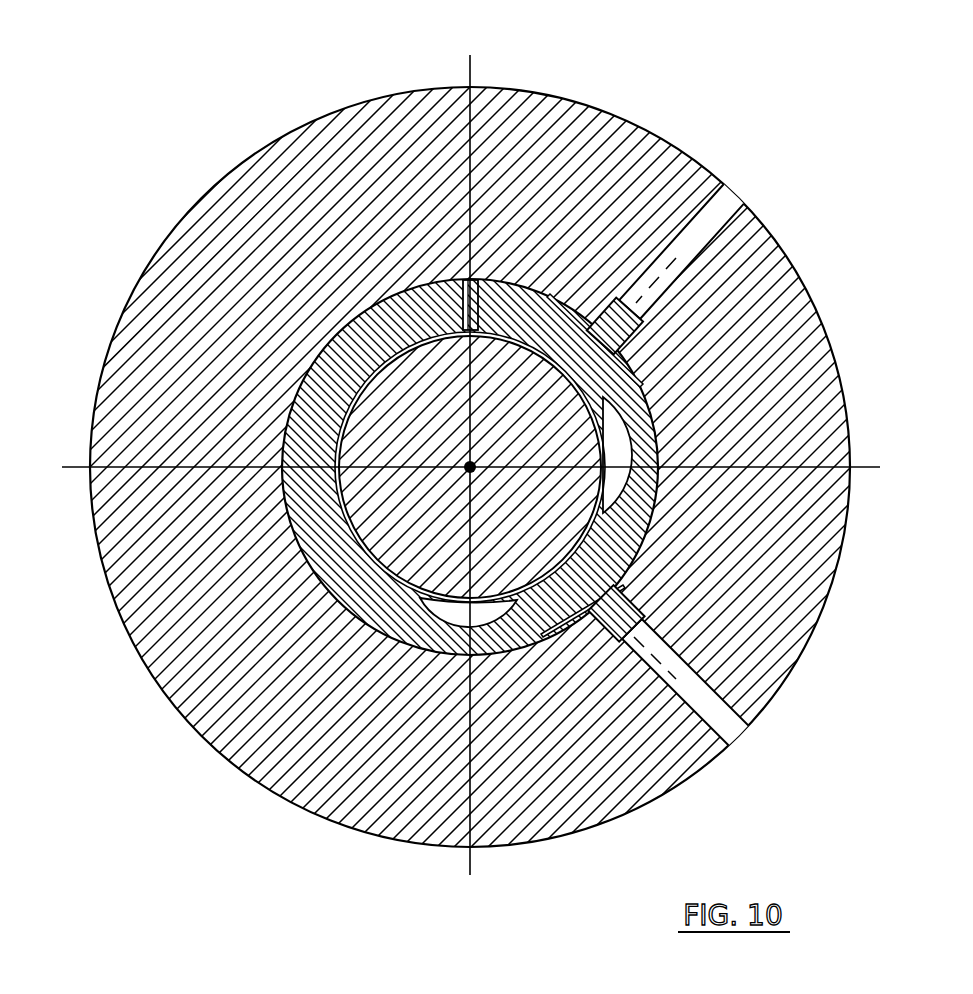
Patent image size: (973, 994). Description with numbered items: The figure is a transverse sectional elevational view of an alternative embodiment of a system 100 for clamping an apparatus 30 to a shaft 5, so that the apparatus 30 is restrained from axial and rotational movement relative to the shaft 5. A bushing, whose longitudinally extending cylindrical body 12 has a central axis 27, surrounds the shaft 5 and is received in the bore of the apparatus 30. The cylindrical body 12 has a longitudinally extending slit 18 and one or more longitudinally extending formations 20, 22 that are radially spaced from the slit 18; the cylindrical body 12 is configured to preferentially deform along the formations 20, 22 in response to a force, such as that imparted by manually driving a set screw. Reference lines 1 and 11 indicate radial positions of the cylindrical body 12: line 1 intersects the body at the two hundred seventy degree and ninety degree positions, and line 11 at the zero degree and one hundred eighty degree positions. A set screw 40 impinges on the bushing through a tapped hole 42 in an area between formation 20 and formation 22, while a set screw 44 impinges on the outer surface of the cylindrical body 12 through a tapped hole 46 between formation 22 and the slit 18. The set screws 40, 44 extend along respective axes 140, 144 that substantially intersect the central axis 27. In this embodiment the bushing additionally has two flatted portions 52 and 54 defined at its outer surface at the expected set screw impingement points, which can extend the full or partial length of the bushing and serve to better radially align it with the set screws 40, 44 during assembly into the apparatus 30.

The system 100 is at (840, 78).
The apparatus 30 is at (547, 130).
The longitudinally extending slit 18 is at (464, 283).
The axis of set screw 144 is at (653, 277).
The tapped hole 46 is at (727, 213).
The set screw 44 is at (587, 352).
The flatted portion 54 is at (641, 352).
The central axis 27 is at (523, 432).
The longitudinally extending formation 22 is at (615, 455).
The shaft 5 is at (400, 430).
The reference line 1 is at (92, 468).
The set screw 40 is at (600, 585).
The tapped hole 42 is at (735, 722).
The axis of set screw 140 is at (650, 658).
The flatted portion 52 is at (580, 612).
The reference line 11 is at (470, 856).
The longitudinally extending formation 20 is at (455, 625).
The cylindrical body 12 is at (375, 607).